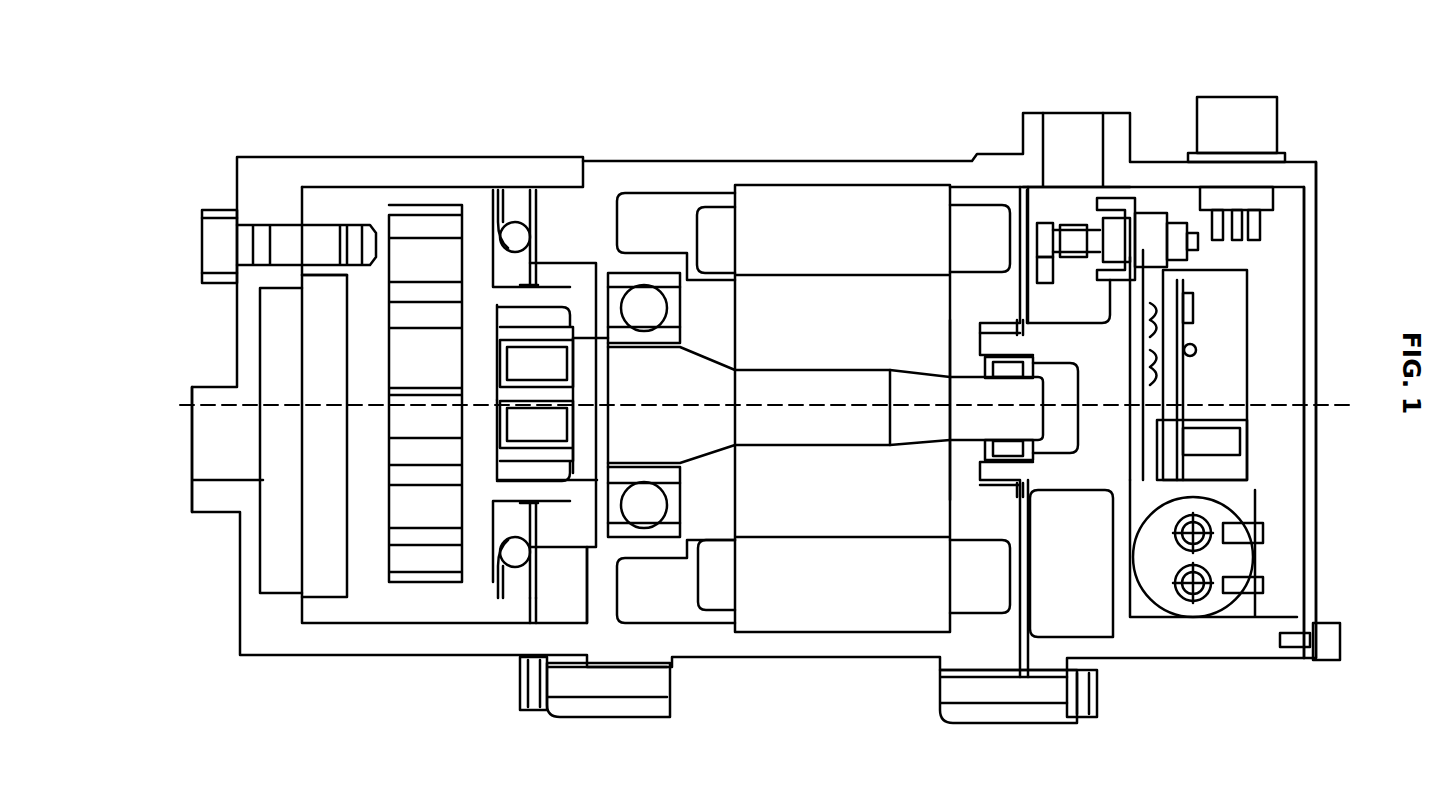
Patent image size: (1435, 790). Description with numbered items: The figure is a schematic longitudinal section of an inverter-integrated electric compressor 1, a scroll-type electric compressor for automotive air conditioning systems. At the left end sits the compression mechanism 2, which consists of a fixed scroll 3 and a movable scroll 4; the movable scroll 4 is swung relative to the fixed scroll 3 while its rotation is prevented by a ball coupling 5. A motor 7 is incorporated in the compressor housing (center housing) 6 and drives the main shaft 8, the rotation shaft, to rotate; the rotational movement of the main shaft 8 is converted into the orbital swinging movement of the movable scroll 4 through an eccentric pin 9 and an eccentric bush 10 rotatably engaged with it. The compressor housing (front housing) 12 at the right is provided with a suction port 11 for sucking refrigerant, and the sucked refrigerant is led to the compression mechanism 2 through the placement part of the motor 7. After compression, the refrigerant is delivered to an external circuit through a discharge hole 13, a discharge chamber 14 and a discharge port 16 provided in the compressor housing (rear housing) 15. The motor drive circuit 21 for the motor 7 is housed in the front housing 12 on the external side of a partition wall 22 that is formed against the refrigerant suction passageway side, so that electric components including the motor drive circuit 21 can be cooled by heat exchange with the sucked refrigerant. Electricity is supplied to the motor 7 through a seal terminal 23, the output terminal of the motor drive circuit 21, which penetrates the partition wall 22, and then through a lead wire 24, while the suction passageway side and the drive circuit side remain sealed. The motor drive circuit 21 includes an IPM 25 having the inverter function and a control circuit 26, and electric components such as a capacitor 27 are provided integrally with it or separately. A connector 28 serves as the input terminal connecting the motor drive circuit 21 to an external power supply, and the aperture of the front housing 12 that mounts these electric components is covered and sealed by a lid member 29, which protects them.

The inverter-integrated electric compressor 1 is at (758, 106).
The compression mechanism 2 is at (424, 195).
The fixed scroll 3 is at (352, 210).
The movable scroll 4 is at (476, 215).
The ball coupling 5 is at (515, 568).
The compressor housing (center housing) 6 is at (852, 175).
The motor 7 is at (898, 212).
The main shaft 8 is at (812, 425).
The eccentric pin 9 is at (533, 367).
The eccentric bush 10 is at (556, 430).
The suction port 11 is at (1072, 128).
The compressor housing (front housing) 12 is at (1153, 175).
The discharge hole 13 is at (371, 380).
The discharge chamber 14 is at (285, 333).
The compressor housing (rear housing) 15 is at (265, 640).
The discharge port 16 is at (210, 452).
The motor drive circuit 21 is at (1221, 342).
The partition wall 22 is at (1113, 303).
The seal terminal 23 is at (1157, 213).
The lead wire 24 is at (1052, 272).
The IPM (Intelligent Power Module) 25 is at (1160, 420).
The control circuit 26 is at (1190, 462).
The capacitor 27 is at (1217, 513).
The connector 28 is at (1275, 123).
The lid member 29 is at (1318, 358).